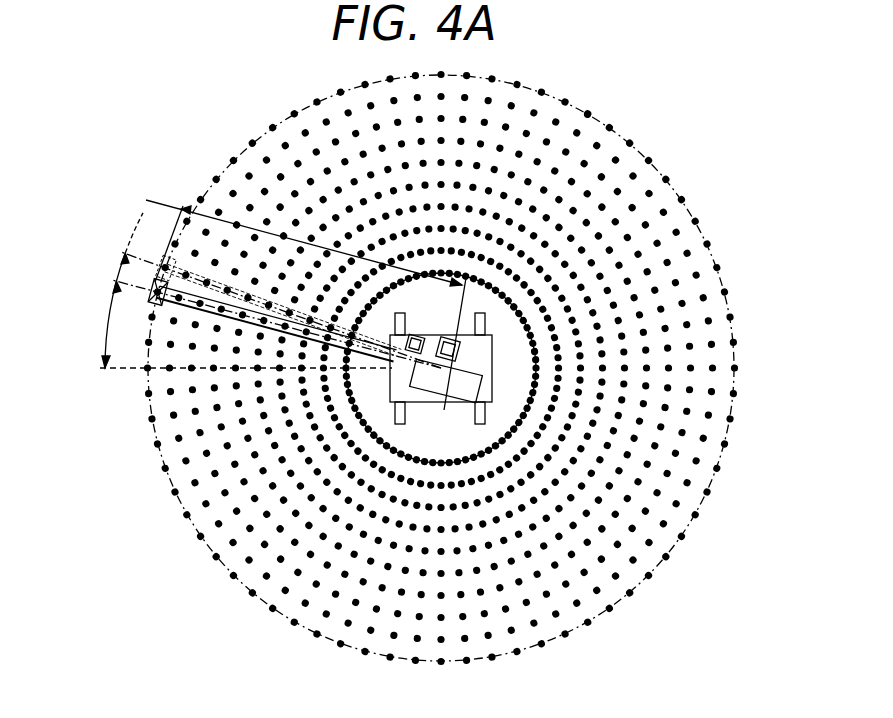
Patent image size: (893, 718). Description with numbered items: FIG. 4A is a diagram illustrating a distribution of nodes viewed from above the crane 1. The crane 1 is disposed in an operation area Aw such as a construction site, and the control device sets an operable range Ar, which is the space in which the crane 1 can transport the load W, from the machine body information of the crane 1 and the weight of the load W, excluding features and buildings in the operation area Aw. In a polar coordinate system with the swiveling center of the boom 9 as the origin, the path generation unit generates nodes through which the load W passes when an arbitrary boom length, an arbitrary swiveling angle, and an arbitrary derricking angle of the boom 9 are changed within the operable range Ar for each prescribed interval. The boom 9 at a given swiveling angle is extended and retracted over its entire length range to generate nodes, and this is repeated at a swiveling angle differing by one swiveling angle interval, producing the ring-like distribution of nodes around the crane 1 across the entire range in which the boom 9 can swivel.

The crane 1 is at (304, 271).
The boom 9 is at (450, 394).
The load W is at (148, 303).
The operation area Aw is at (93, 78).
The operable range Ar is at (703, 262).